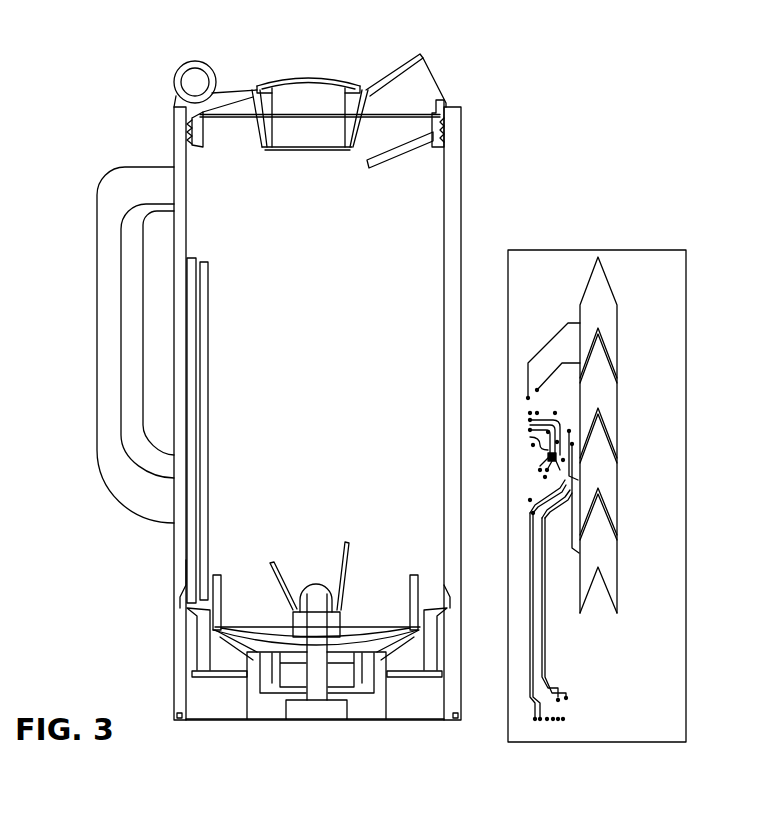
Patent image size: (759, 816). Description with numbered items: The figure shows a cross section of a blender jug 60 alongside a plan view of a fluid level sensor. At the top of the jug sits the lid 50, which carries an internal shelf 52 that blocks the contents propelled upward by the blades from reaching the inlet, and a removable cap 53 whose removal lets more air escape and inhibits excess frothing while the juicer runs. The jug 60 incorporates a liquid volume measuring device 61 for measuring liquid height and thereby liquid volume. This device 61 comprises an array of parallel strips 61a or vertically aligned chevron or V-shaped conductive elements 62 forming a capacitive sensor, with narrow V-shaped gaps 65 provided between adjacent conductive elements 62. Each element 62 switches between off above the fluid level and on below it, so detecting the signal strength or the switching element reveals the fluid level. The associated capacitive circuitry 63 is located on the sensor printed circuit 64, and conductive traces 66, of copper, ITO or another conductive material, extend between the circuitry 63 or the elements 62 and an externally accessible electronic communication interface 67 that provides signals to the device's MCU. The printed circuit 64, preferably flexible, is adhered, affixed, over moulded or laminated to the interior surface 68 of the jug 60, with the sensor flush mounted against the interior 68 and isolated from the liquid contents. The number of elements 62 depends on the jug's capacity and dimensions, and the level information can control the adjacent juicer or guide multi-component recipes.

The lid 50 is at (232, 88).
The internal shelf 52 is at (400, 153).
The cap 53 is at (320, 85).
The blender jug 60 is at (458, 235).
The liquid volume measuring device 61 is at (633, 270).
The parallel strips 61a is at (203, 357).
The conductive elements 62 is at (603, 320).
The capacitive circuitry 63 is at (530, 437).
The sensor printed circuit 64 is at (620, 708).
The V-shaped gaps 65 is at (603, 505).
The conductive traces 66 is at (542, 647).
The electronic communication interface 67 is at (182, 706).
The interior surface 68 is at (190, 222).